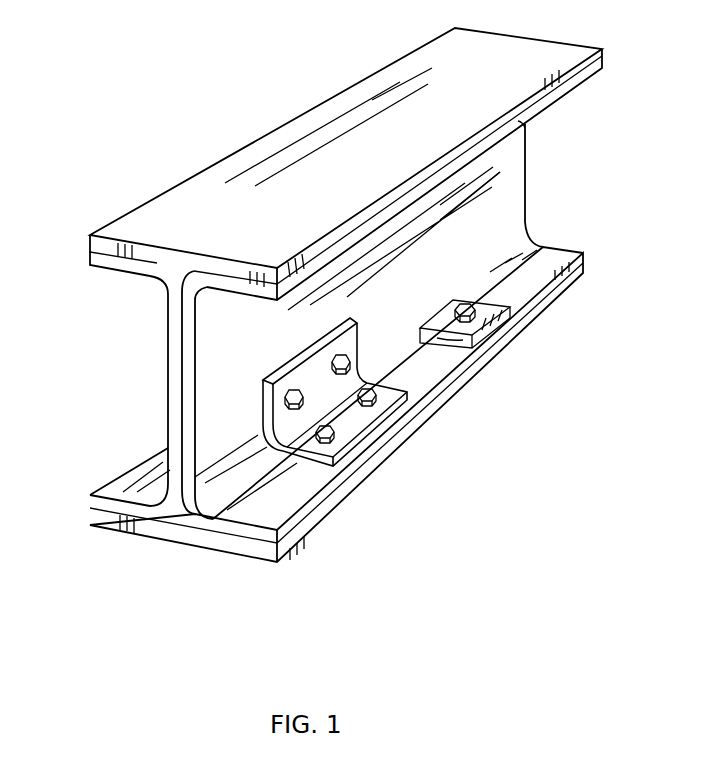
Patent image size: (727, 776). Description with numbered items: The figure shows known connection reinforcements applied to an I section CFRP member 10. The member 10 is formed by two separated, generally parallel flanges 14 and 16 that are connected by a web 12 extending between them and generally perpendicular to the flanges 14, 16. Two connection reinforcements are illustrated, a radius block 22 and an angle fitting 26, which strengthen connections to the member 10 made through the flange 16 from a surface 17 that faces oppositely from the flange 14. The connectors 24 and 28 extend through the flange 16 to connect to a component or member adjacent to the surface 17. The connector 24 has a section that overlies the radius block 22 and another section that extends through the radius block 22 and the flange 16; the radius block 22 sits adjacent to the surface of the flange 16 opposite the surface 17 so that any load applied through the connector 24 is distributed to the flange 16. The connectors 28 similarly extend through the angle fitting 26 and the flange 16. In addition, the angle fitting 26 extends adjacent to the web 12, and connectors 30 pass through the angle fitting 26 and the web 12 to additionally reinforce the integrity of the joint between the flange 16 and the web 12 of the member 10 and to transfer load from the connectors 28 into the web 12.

The I section CFRP member 10 is at (112, 377).
The web 12 is at (168, 346).
The flange 14 is at (151, 213).
The flange 16 is at (113, 526).
The surface 17 is at (160, 565).
The radius block 22 is at (473, 347).
The connector 24 is at (477, 310).
The angle fitting 26 is at (288, 456).
The connectors 28 is at (330, 440).
The connectors 30 is at (350, 367).